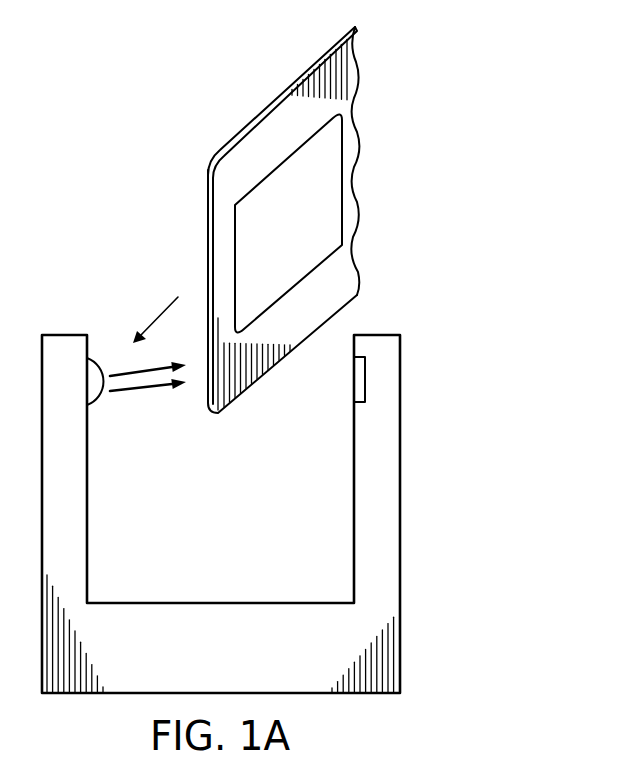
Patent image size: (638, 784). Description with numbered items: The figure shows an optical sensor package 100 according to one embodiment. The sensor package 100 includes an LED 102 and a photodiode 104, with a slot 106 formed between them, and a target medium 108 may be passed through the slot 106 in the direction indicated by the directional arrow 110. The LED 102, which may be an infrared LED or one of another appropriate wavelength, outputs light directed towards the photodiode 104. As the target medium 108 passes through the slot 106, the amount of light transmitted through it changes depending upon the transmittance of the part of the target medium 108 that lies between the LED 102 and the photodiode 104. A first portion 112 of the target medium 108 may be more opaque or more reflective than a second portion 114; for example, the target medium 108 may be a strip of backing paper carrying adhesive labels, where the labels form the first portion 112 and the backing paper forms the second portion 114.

The optical sensor package 100 is at (93, 98).
The LED 102 is at (93, 389).
The photodiode 104 is at (360, 380).
The slot 106 is at (262, 477).
The target medium 108 is at (208, 258).
The directional arrow 110 is at (155, 321).
The first portion 112 is at (341, 198).
The second portion 114 is at (349, 270).